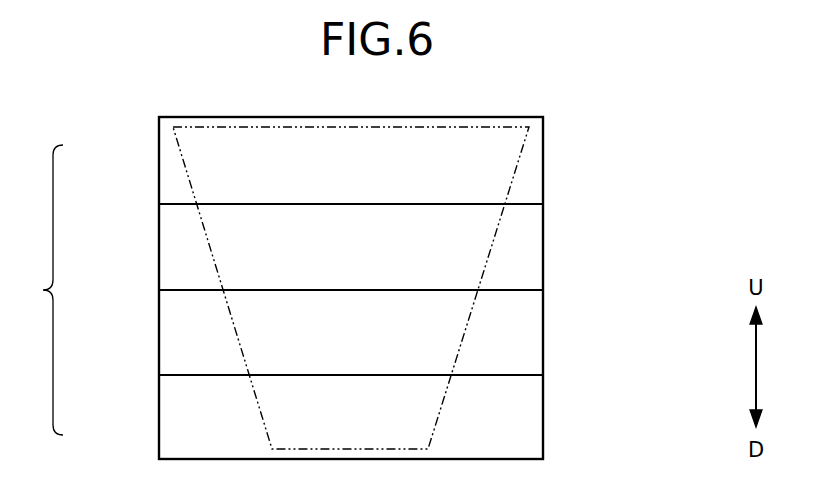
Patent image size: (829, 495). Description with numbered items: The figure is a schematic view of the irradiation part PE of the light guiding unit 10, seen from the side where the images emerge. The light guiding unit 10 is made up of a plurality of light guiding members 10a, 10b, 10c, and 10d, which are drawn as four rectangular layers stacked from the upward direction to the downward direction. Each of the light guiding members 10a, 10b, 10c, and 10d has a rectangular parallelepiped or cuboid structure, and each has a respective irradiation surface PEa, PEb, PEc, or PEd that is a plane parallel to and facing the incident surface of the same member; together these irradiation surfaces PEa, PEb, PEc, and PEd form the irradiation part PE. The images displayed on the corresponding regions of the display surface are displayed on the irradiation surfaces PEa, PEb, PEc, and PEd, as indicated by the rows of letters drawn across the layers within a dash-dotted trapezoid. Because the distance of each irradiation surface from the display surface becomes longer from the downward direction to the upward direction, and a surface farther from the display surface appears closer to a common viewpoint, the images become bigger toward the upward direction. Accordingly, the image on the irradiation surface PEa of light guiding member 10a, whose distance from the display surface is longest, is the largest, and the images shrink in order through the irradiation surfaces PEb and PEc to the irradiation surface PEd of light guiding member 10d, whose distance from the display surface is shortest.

The light guiding unit 10 is at (632, 152).
The light guiding member 10a is at (543, 171).
The light guiding member 10b is at (543, 254).
The light guiding member 10c is at (543, 345).
The light guiding member 10d is at (543, 415).
The irradiation part PE is at (35, 290).
The irradiation surface PEa is at (159, 170).
The irradiation surface PEb is at (159, 248).
The irradiation surface PEc is at (159, 340).
The irradiation surface PEd is at (159, 410).